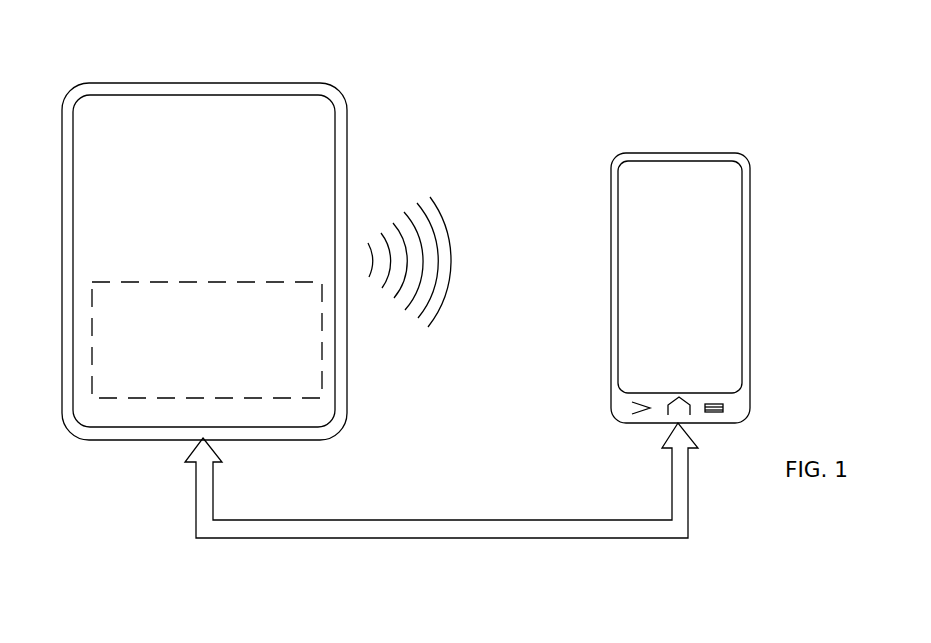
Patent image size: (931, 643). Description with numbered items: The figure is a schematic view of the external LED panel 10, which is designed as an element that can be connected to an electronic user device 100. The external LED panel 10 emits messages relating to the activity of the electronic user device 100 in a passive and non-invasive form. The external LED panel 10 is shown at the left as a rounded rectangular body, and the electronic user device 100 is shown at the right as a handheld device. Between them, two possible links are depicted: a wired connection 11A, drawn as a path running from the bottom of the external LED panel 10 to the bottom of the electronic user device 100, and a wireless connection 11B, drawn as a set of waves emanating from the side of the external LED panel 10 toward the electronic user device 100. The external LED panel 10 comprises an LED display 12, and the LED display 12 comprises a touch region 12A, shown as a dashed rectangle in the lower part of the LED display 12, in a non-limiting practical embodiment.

The external LED panel 10 is at (337, 92).
The LED display 12 is at (204, 261).
The touch region 12A is at (207, 340).
The electronic user device 100 is at (680, 288).
The wired connection 11A is at (441, 502).
The wireless connection 11B is at (426, 258).